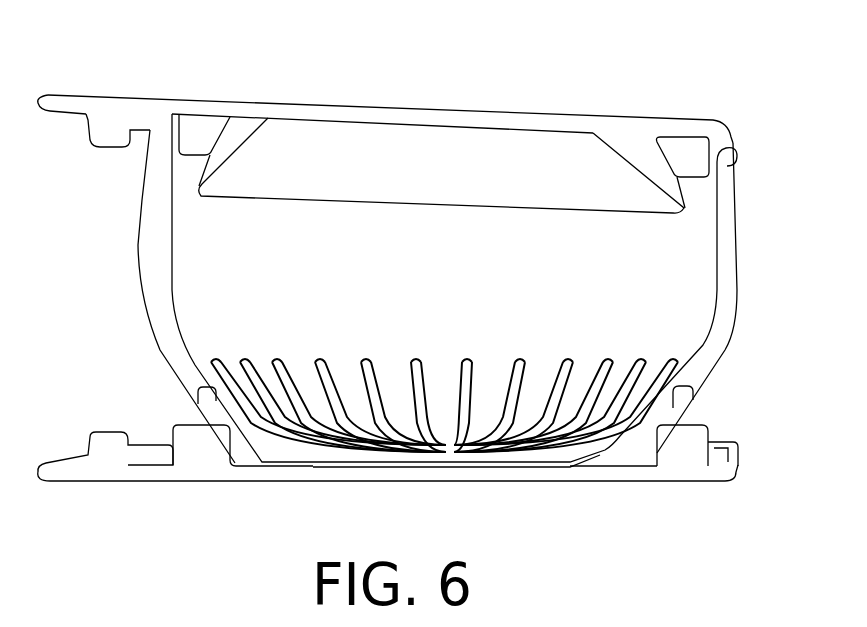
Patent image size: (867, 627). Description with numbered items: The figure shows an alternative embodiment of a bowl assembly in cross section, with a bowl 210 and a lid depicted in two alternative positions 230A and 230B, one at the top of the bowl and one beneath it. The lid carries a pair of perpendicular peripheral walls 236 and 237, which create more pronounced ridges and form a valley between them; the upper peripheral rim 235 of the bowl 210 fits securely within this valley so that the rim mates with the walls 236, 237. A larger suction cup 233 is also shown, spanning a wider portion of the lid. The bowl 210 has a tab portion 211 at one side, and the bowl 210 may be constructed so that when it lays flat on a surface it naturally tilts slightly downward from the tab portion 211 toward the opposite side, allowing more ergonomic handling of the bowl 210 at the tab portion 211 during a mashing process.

The bowl 210 is at (147, 262).
The tab portion 211 is at (58, 125).
The lid in first alternative position 230A is at (160, 97).
The lid in second alternative position 230B is at (238, 478).
The suction cup 233 is at (237, 153).
The upper peripheral rim 235 is at (725, 150).
The peripheral wall 236 is at (702, 432).
The peripheral wall 237 is at (732, 458).